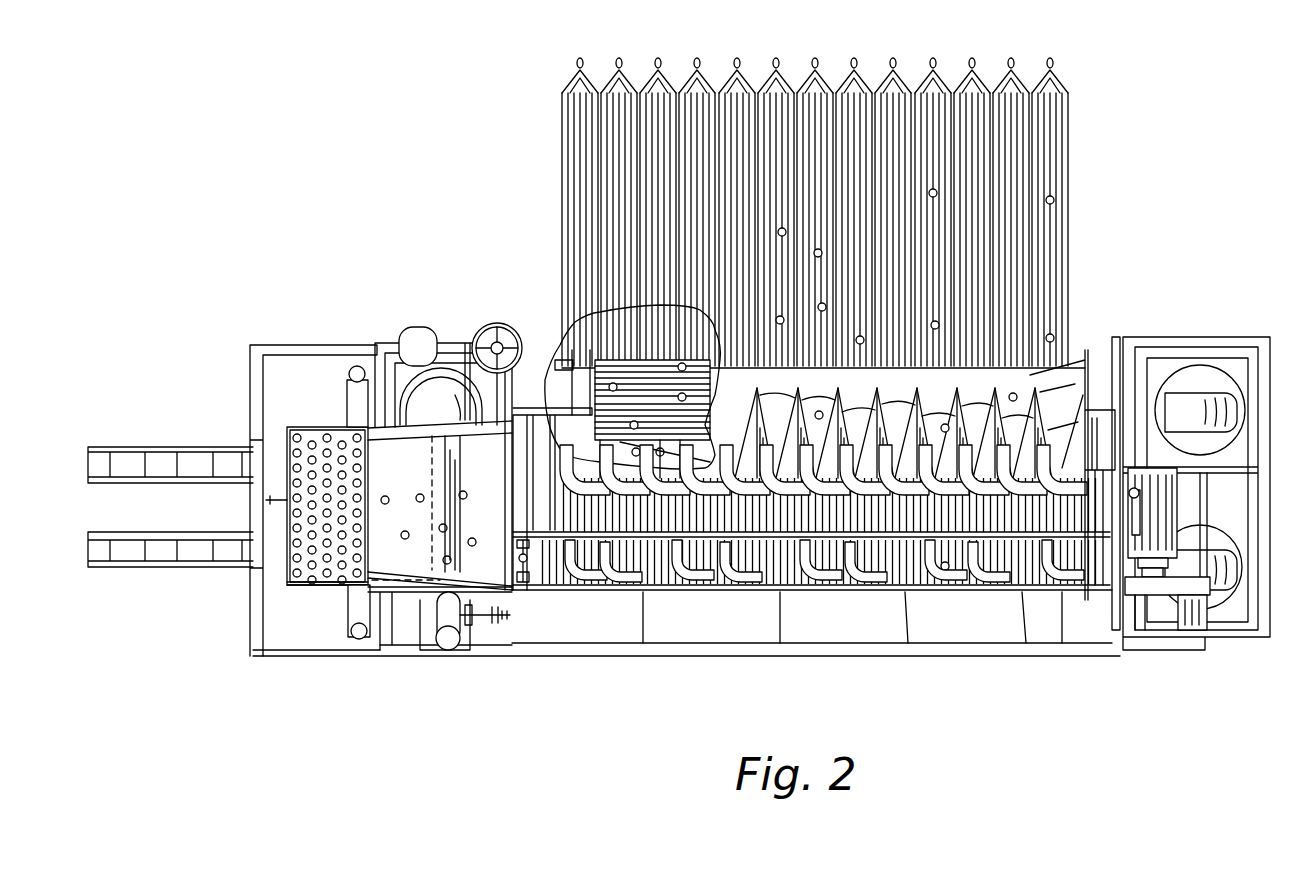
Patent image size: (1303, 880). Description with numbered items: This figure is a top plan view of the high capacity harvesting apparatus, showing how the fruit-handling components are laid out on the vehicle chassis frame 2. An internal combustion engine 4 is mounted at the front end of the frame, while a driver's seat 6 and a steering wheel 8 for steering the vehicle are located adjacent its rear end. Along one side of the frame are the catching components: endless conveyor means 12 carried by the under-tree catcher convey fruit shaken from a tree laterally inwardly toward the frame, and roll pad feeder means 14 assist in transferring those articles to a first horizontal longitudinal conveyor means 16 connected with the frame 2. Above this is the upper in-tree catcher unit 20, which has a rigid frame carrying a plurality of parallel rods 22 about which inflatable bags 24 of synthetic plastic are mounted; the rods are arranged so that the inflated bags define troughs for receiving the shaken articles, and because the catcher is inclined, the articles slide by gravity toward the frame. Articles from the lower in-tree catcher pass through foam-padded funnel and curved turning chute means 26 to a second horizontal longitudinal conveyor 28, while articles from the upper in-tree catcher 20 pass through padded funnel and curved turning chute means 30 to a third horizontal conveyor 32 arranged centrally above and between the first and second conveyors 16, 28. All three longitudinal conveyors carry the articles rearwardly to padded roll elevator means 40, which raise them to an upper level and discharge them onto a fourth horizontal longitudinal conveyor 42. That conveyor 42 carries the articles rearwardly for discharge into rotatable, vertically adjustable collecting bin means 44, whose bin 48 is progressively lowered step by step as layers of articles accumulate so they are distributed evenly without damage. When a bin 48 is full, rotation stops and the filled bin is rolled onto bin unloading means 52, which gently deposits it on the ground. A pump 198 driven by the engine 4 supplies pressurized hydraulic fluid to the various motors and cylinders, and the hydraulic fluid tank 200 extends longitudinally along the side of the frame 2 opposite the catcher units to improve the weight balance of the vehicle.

The vehicle chassis frame 2 is at (1106, 403).
The internal combustion engine 4 is at (1172, 500).
The driver's seat 6 is at (415, 326).
The steering wheel 8 is at (497, 324).
The endless conveyor means 12 is at (566, 379).
The roll pad feeder means 14 is at (738, 398).
The first horizontal longitudinal conveyor means 16 is at (560, 405).
The upper in-tree catcher unit 20 is at (823, 186).
The parallel rods 22 is at (577, 333).
The inflatable bags 24 is at (697, 78).
The padded funnel and curved turning chute means 26 is at (1068, 580).
The second horizontal longitudinal conveyor 28 is at (945, 572).
The padded funnel and curved turning chute means 30 is at (1068, 378).
The third horizontal conveyor 32 is at (910, 483).
The padded roll elevator means 40 is at (541, 580).
The fourth horizontal longitudinal conveyor 42 is at (418, 492).
The rotatable vertically-adjustable collecting bin means 44 is at (320, 420).
The collecting bin 48 is at (316, 591).
The bin unloading means 52 is at (192, 568).
The pump 198 is at (1192, 632).
The hydraulic fluid tank 200 is at (870, 630).